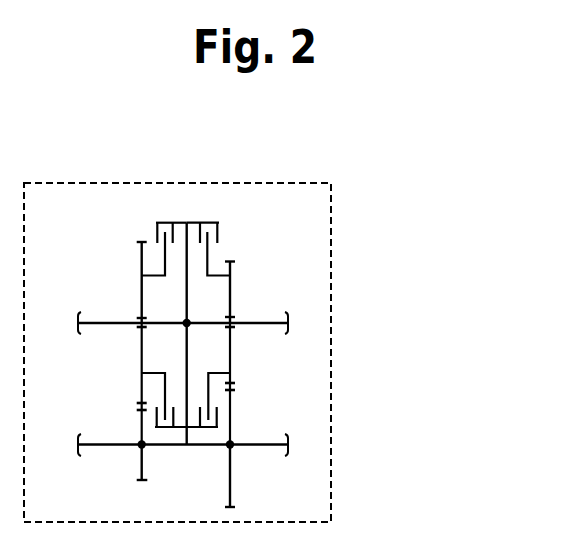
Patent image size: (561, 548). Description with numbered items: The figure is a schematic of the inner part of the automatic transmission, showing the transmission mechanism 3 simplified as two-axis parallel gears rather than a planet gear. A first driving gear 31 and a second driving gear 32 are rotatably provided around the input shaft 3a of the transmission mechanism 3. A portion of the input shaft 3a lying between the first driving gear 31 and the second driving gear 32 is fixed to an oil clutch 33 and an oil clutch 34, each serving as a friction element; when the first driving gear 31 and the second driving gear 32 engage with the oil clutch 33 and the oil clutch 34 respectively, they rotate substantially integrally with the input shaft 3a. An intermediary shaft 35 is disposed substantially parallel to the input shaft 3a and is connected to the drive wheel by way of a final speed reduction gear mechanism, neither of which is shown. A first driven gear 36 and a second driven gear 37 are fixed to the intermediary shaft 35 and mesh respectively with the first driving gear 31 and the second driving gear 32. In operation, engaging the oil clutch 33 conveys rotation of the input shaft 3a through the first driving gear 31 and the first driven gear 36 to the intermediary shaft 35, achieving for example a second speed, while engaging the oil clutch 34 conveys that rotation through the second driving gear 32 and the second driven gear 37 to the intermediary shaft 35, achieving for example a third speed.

The transmission mechanism 3 is at (331, 265).
The input shaft 3a is at (110, 323).
The first driving gear 31 is at (230, 287).
The second driving gear 32 is at (142, 262).
The oil clutch 33 is at (210, 222).
The oil clutch 34 is at (165, 222).
The intermediary shaft 35 is at (106, 445).
The first driven gear 36 is at (230, 478).
The second driven gear 37 is at (142, 460).